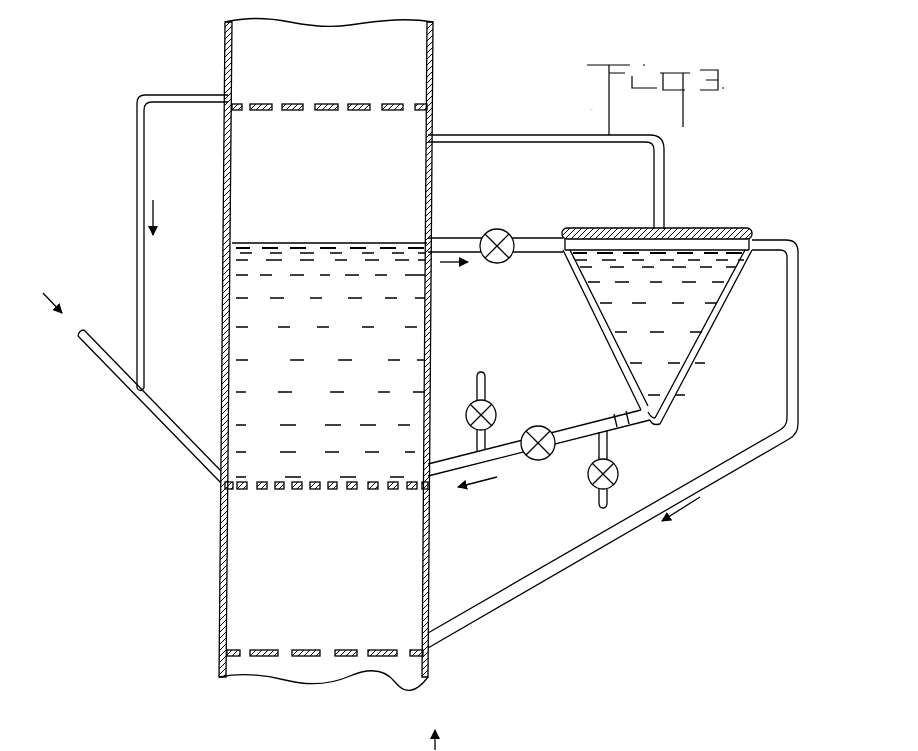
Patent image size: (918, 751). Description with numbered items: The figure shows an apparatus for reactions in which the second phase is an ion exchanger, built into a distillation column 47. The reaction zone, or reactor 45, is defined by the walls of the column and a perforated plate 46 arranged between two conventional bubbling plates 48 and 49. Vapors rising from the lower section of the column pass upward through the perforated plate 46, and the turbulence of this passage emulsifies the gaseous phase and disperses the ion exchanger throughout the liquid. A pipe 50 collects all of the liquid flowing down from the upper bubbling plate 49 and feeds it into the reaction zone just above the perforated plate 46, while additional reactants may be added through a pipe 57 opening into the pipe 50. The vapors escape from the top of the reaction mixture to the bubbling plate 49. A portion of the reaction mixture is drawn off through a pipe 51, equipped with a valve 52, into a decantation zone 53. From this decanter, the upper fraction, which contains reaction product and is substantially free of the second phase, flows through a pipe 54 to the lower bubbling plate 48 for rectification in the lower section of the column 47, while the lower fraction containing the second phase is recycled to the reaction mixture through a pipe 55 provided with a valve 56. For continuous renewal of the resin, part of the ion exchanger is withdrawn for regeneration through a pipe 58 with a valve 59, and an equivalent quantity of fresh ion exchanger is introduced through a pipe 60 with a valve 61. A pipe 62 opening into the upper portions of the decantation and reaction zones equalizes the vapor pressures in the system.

The reactor 45 is at (430, 326).
The perforated plate 46 is at (315, 487).
The distillation column 47 is at (435, 58).
The bubbling plate 48 is at (318, 658).
The bubbling plate 49 is at (357, 106).
The pipe 50 is at (139, 222).
The pipe 51 is at (463, 237).
The valve 52 is at (503, 235).
The decantation zone 53 is at (602, 328).
The pipe 54 is at (800, 365).
The pipe 55 is at (633, 413).
The valve 56 is at (545, 460).
The pipe 57 is at (117, 373).
The pipe 58 is at (610, 497).
The valve 59 is at (615, 462).
The pipe 60 is at (486, 384).
The valve 61 is at (496, 410).
The pipe 62 is at (542, 147).